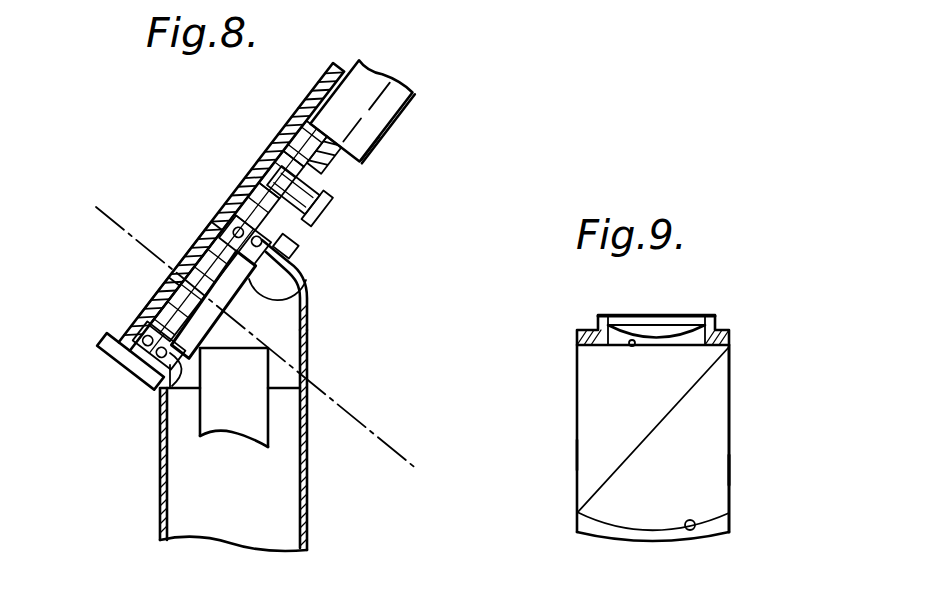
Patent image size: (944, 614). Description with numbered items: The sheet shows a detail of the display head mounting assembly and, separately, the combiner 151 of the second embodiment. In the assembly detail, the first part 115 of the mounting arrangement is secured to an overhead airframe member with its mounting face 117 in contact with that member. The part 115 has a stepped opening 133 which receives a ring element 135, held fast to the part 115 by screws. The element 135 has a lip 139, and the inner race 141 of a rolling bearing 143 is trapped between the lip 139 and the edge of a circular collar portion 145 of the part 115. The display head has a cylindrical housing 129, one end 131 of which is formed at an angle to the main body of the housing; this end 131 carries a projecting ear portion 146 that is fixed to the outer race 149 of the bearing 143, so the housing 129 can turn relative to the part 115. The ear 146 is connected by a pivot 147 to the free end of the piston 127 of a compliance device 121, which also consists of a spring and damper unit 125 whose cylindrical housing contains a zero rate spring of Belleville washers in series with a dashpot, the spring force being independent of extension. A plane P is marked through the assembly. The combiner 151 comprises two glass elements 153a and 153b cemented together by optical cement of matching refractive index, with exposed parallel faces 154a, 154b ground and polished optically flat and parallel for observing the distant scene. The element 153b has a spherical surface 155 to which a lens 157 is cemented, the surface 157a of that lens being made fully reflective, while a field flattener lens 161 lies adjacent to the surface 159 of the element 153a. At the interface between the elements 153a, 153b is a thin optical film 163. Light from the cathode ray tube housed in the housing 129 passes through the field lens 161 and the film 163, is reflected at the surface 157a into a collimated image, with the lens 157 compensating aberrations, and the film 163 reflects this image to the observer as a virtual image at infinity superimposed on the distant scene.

In FIG. 8, the first part 115 is at (140, 377).
In FIG. 8, the mounting face 117 is at (262, 142).
In FIG. 8, the compliance device 121 is at (381, 151).
In FIG. 8, the spring and damper unit 125 is at (404, 118).
In FIG. 8, the piston 127 is at (317, 147).
In FIG. 8, the cylindrical housing 129 is at (307, 533).
In FIG. 8, the end 131 is at (288, 248).
In FIG. 8, the stepped opening 133 is at (190, 250).
In FIG. 8, the ring element 135 is at (182, 343).
In FIG. 8, the lip 139 is at (167, 395).
In FIG. 8, the inner race 141 is at (300, 287).
In FIG. 8, the rolling bearing 143 is at (262, 202).
In FIG. 8, the circular collar portion 145 is at (168, 290).
In FIG. 8, the projecting ear portion 146 is at (317, 189).
In FIG. 8, the pivot 147 is at (280, 180).
In FIG. 8, the outer race 149 is at (250, 225).
In FIG. 8, the plane P- P is at (262, 336).
In FIG. 9, the combiner 151 is at (746, 340).
In FIG. 9, the glass element 153a is at (595, 392).
In FIG. 9, the glass element 153b is at (807, 406).
In FIG. 9, the exposed parallel face 154a is at (578, 449).
In FIG. 9, the exposed parallel face 154b is at (804, 456).
In FIG. 9, the spherical surface 155 is at (698, 530).
In FIG. 9, the lens 157 is at (718, 522).
In FIG. 9, the surface 157a is at (595, 535).
In FIG. 9, the surface 159 is at (629, 344).
In FIG. 9, the field flattener lens 161 is at (688, 314).
In FIG. 9, the thin optical film 163 is at (633, 449).